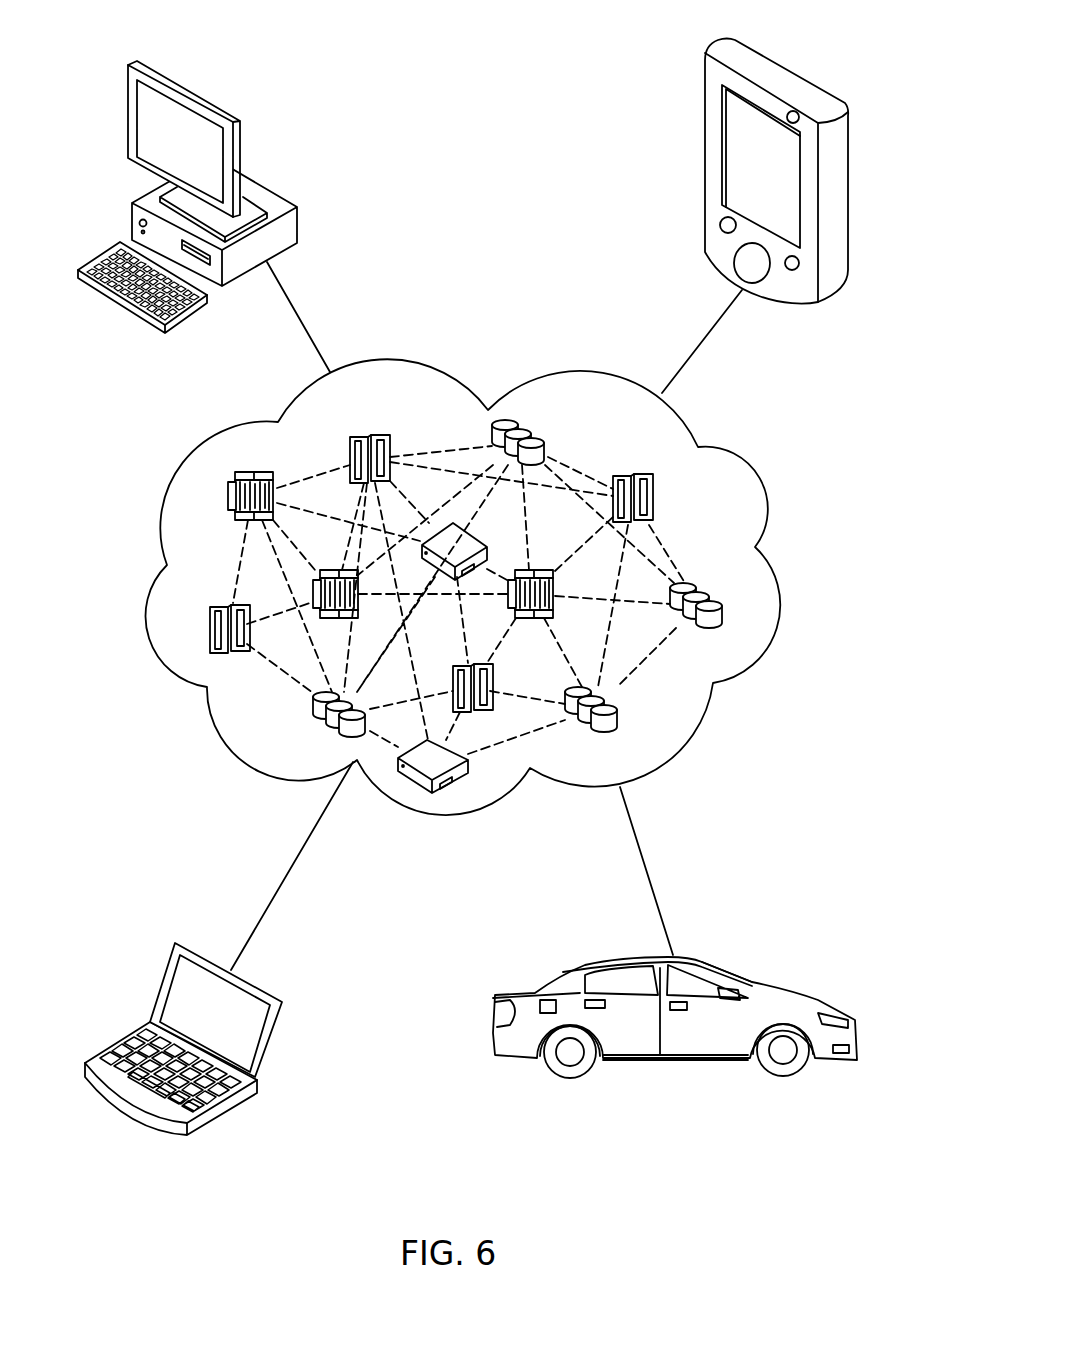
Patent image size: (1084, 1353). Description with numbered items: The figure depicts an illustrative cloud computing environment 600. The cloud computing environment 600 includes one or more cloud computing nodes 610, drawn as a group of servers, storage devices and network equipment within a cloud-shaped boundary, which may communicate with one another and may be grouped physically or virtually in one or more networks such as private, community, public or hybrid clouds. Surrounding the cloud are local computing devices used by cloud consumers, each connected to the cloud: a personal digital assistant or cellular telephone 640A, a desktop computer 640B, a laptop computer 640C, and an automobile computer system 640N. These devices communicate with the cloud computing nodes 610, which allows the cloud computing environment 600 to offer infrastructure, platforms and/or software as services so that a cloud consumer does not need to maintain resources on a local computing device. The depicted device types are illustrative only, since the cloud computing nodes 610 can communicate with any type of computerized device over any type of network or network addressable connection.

The cloud computing environment 600 is at (755, 667).
The cloud computing nodes 610 is at (698, 520).
The personal digital assistant (PDA) or cellular telephone 640A is at (702, 118).
The desktop computer 640B is at (300, 222).
The laptop computer 640C is at (283, 1010).
The automobile computer system 640N is at (855, 1020).